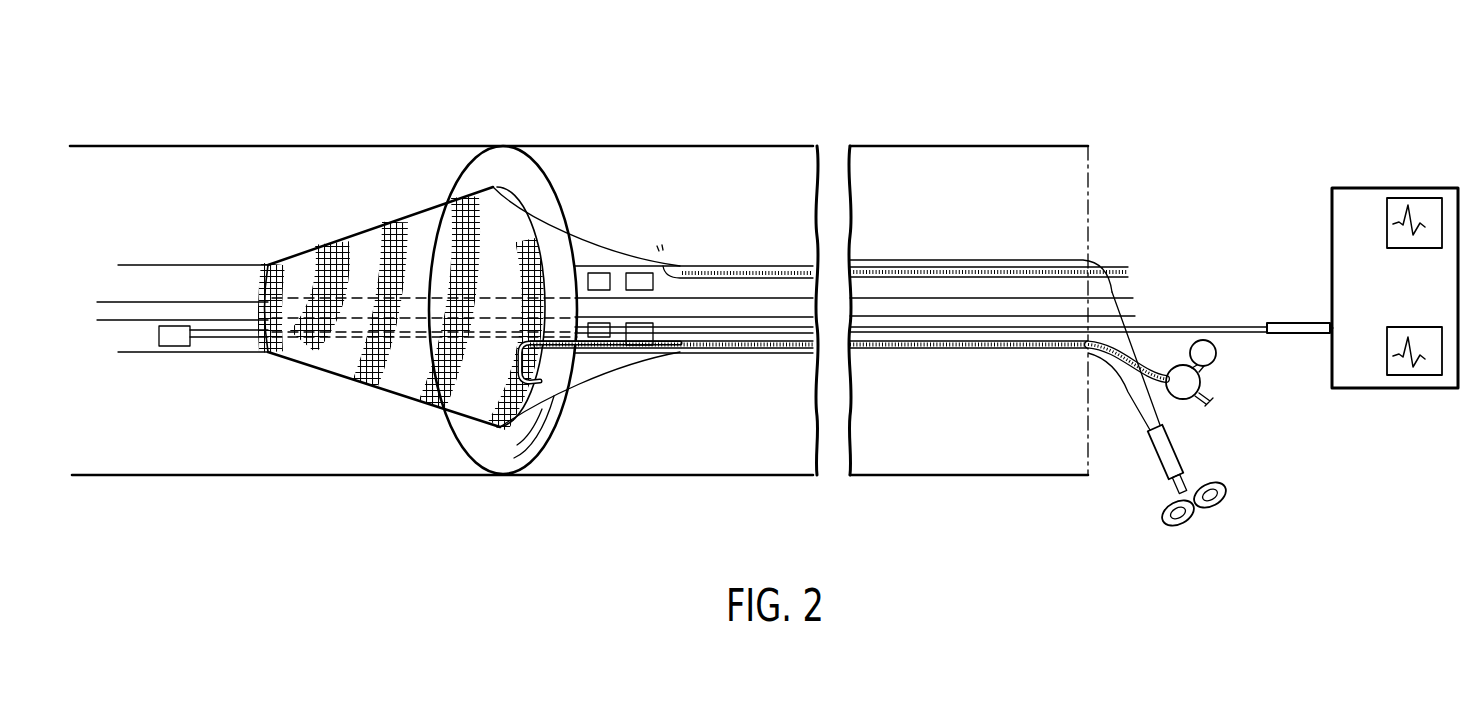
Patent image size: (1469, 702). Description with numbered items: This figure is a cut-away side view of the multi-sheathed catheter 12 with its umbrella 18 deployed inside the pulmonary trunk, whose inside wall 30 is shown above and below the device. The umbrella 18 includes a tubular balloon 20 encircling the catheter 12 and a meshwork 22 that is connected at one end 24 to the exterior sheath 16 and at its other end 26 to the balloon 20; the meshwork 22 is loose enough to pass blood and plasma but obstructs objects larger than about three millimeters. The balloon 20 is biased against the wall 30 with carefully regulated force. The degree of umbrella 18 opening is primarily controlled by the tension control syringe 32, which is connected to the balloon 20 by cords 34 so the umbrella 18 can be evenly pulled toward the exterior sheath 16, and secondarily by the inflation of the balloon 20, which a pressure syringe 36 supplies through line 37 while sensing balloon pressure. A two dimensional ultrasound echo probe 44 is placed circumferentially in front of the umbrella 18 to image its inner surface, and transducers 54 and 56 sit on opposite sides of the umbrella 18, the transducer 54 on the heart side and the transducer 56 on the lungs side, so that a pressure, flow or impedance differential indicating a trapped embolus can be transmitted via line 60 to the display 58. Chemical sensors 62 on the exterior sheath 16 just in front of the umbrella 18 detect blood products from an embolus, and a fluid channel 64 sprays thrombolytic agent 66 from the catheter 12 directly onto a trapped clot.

The multi-sheathed catheter 12 is at (241, 188).
The exterior sheath 16 is at (187, 263).
The umbrella 18 is at (477, 133).
The tubular balloon 20 is at (545, 177).
The meshwork 22 is at (327, 252).
The one end of meshwork 24 is at (270, 263).
The other end of meshwork 26 is at (493, 187).
The inside wall of pulmonary trunk 30 is at (707, 142).
The tension control syringe 32 is at (1177, 461).
The cords 34 is at (578, 236).
The pressure syringe 36 is at (1192, 385).
The line 37 is at (770, 350).
The two dimensional ultrasound echo probe 44 is at (601, 273).
The transducer 54 is at (642, 346).
The transducer 56 is at (167, 347).
The display 58 is at (1330, 231).
The line 60 is at (1183, 326).
The chemical sensors 62 is at (637, 273).
The fluid channel 64 is at (907, 270).
The agent 66 is at (672, 249).